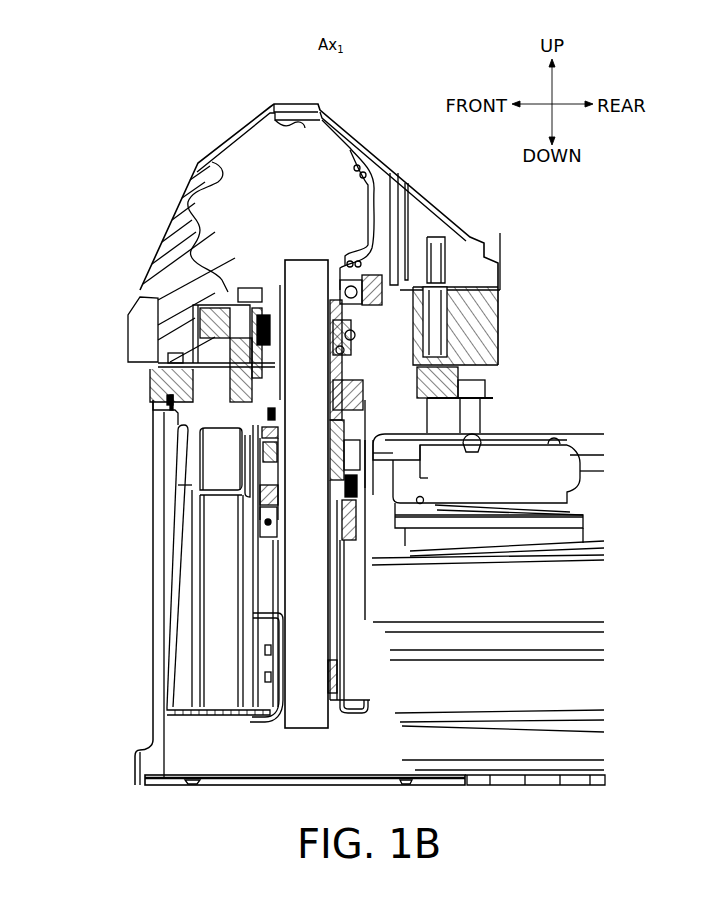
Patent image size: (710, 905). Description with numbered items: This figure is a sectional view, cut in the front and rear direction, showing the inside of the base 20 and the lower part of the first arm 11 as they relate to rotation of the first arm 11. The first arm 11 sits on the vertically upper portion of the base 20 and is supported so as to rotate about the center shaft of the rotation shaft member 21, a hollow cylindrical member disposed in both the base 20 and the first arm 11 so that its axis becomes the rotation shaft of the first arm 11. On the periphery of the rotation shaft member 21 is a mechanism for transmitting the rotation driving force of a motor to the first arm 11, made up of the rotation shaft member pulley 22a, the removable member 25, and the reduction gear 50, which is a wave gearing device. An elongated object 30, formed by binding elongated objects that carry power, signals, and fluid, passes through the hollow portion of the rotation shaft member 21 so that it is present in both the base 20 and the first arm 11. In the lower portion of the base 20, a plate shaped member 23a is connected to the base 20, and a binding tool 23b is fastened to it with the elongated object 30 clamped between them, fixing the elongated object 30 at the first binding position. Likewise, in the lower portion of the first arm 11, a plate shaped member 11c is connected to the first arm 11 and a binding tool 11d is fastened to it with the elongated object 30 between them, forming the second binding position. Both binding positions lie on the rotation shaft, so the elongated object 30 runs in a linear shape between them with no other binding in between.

The first arm 11 is at (273, 264).
The plate shaped member 11c is at (412, 234).
The binding tool 11d is at (190, 262).
The elongated object 30 is at (284, 260).
The reduction gear 50 is at (492, 318).
The rotation shaft member pulley 22a is at (211, 420).
The rotation shaft member 21 is at (221, 557).
The plate shaped member 23a is at (221, 710).
The binding tool 23b is at (371, 751).
The removable member 25 is at (353, 450).
The base 20 is at (380, 602).